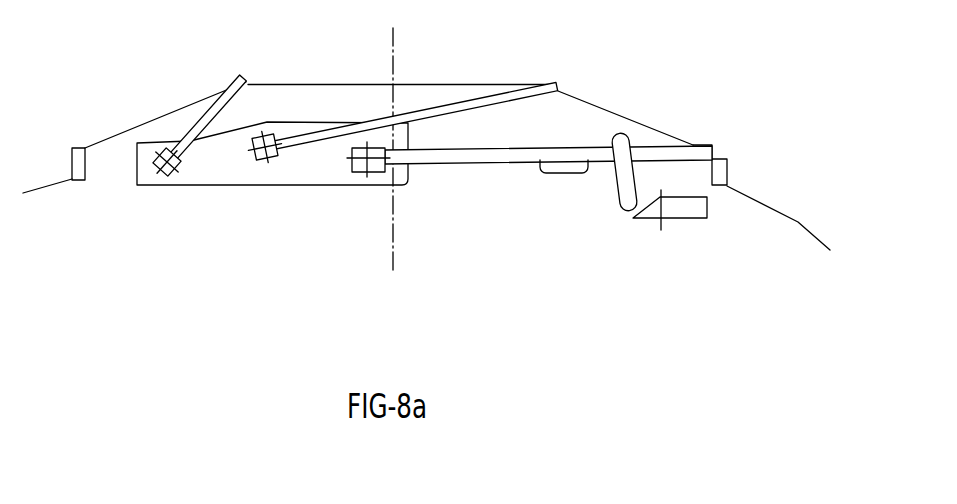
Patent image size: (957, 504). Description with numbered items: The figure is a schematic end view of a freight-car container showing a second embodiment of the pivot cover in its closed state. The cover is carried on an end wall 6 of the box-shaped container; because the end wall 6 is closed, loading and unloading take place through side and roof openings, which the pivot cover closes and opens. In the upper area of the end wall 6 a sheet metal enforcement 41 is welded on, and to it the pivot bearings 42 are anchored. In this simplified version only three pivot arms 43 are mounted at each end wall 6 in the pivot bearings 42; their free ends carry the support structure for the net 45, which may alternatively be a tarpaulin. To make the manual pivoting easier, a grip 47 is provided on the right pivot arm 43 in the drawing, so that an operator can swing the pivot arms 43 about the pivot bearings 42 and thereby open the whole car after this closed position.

The end wall 6 is at (470, 212).
The sheet metal enforcement 41 is at (243, 180).
The pivot bearing 42 is at (360, 167).
The pivot arm 43 is at (193, 128).
The net 45 is at (612, 112).
The grip 47 is at (563, 167).